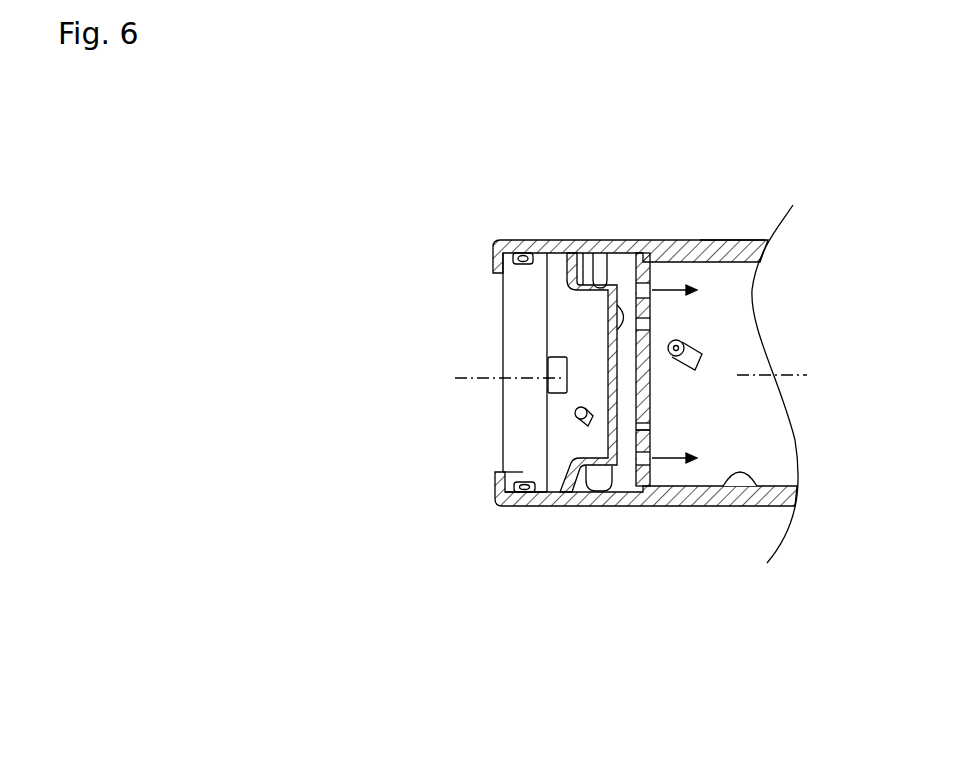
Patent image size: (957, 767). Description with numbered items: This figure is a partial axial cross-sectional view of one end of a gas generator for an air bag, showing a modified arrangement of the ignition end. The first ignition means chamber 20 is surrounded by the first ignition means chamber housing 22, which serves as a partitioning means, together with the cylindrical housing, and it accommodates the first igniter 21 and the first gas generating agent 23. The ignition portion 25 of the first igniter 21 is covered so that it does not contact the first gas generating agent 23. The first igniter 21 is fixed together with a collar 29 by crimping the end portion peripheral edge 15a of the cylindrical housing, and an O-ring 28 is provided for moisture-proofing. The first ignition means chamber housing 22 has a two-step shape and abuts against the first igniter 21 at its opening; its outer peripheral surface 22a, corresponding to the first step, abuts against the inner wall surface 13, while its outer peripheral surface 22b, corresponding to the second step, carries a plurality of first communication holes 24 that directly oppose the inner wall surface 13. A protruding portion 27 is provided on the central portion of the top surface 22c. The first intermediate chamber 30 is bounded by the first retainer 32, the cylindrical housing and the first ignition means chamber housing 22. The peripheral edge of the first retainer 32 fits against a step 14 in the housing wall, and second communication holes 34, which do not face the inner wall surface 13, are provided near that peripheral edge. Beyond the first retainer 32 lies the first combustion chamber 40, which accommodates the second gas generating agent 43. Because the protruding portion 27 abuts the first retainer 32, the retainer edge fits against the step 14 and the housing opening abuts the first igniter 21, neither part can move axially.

The inner wall surface 13 is at (722, 487).
The step 14 is at (648, 506).
The end portion peripheral edge 15a is at (495, 265).
The first ignition means chamber 20 is at (553, 448).
The first igniter 21 is at (503, 421).
The first ignition means chamber housing 22 is at (552, 401).
The outer peripheral surface 22a is at (557, 240).
The outer peripheral surface 22b is at (594, 290).
The top surface 22c is at (563, 316).
The first gas generating agent 23 is at (574, 414).
The first communication holes 24 is at (565, 435).
The ignition portion 25 is at (548, 366).
The protruding portion 27 is at (743, 242).
The O-ring 28 is at (524, 506).
The collar 29 is at (500, 488).
The first intermediate chamber 30 is at (636, 350).
The first retainer 32 is at (690, 387).
The second communication holes 34 is at (651, 432).
The first combustion chamber 40 is at (747, 335).
The second gas generating agent 43 is at (690, 352).